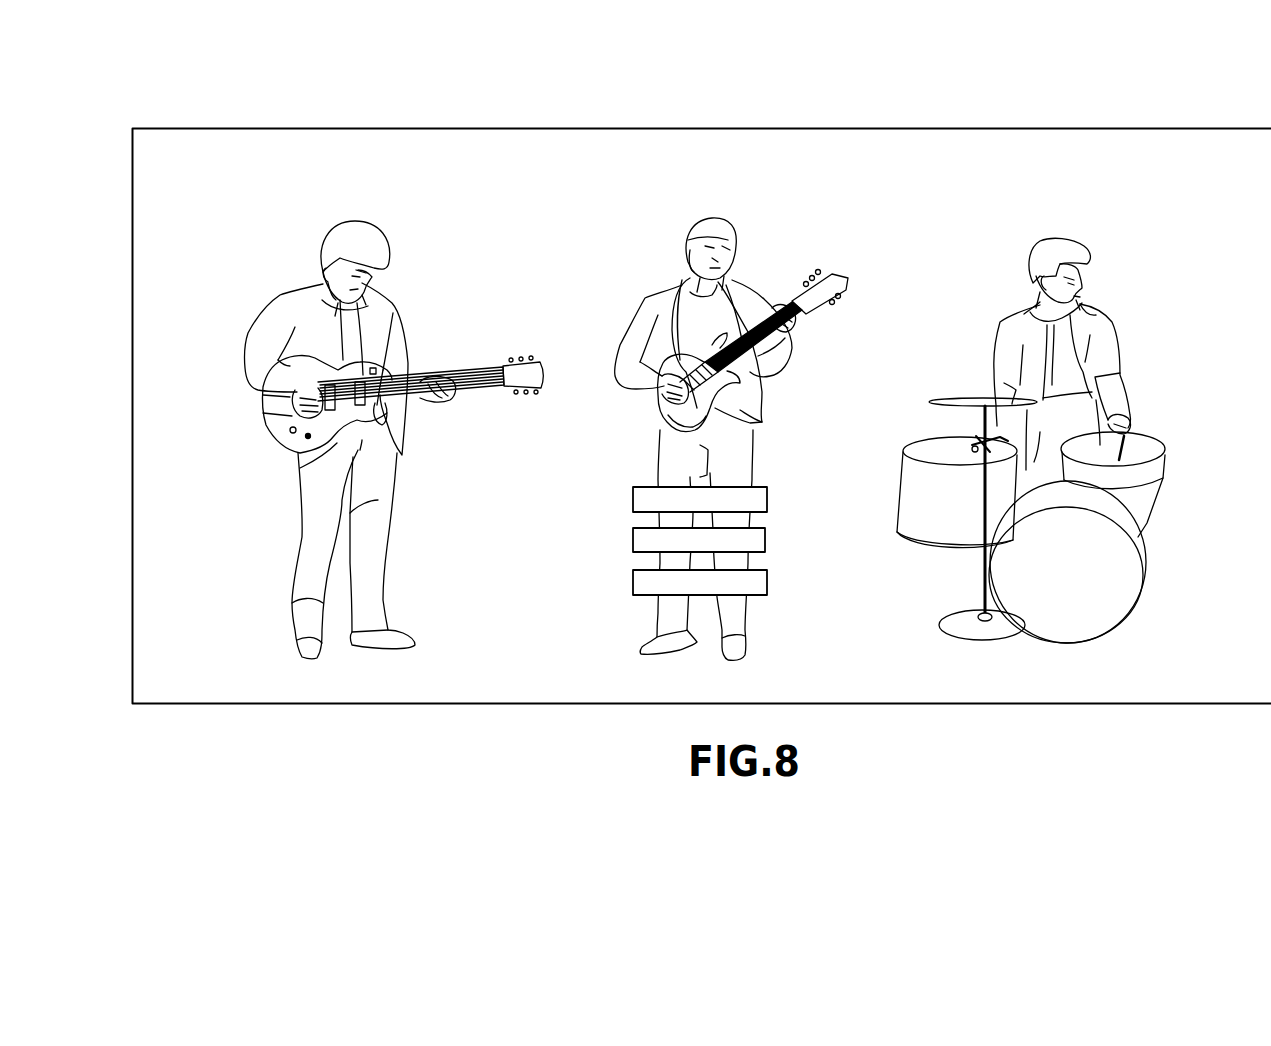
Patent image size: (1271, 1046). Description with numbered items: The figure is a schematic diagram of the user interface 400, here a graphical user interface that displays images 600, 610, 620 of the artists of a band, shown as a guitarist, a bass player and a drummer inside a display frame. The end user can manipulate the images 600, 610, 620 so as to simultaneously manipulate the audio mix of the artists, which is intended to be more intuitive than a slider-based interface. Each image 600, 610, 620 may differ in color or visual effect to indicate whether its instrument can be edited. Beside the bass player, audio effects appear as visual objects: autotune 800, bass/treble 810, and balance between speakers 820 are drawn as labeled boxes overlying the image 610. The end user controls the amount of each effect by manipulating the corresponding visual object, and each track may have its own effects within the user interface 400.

The user interface 400 is at (924, 87).
The image 600 is at (352, 214).
The image 610 is at (713, 215).
The image 620 is at (1054, 234).
The autotune 800 is at (632, 493).
The bass/treble 810 is at (632, 538).
The balance between speakers 820 is at (632, 580).